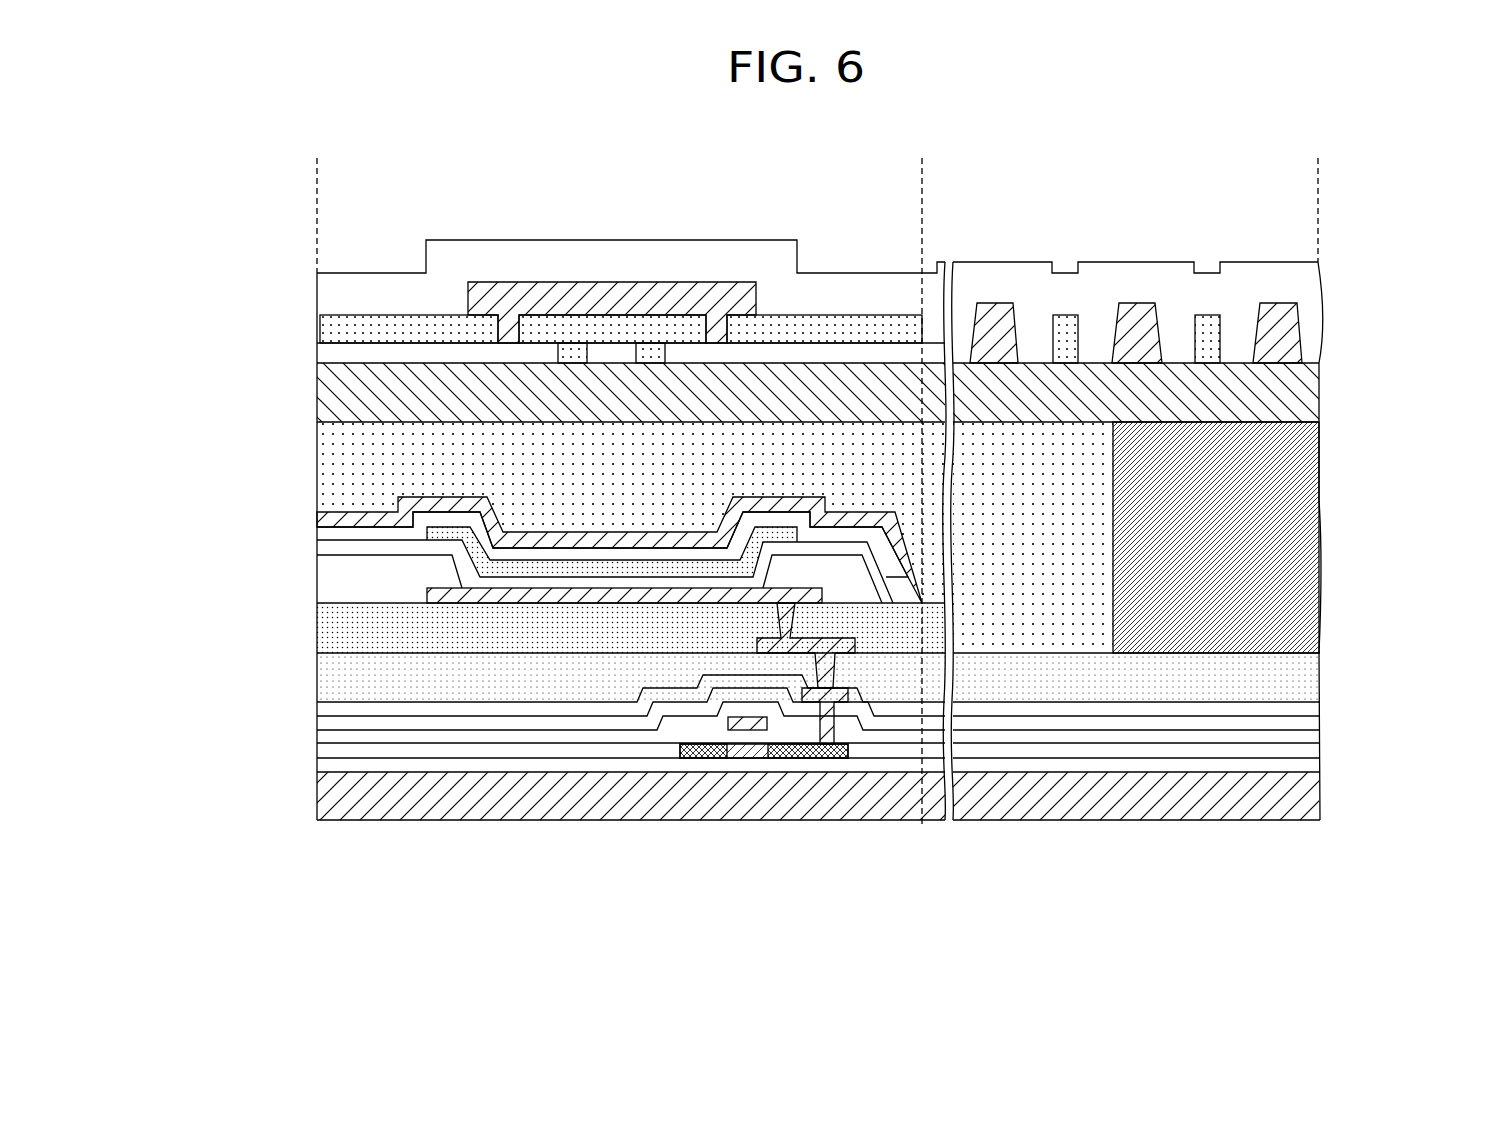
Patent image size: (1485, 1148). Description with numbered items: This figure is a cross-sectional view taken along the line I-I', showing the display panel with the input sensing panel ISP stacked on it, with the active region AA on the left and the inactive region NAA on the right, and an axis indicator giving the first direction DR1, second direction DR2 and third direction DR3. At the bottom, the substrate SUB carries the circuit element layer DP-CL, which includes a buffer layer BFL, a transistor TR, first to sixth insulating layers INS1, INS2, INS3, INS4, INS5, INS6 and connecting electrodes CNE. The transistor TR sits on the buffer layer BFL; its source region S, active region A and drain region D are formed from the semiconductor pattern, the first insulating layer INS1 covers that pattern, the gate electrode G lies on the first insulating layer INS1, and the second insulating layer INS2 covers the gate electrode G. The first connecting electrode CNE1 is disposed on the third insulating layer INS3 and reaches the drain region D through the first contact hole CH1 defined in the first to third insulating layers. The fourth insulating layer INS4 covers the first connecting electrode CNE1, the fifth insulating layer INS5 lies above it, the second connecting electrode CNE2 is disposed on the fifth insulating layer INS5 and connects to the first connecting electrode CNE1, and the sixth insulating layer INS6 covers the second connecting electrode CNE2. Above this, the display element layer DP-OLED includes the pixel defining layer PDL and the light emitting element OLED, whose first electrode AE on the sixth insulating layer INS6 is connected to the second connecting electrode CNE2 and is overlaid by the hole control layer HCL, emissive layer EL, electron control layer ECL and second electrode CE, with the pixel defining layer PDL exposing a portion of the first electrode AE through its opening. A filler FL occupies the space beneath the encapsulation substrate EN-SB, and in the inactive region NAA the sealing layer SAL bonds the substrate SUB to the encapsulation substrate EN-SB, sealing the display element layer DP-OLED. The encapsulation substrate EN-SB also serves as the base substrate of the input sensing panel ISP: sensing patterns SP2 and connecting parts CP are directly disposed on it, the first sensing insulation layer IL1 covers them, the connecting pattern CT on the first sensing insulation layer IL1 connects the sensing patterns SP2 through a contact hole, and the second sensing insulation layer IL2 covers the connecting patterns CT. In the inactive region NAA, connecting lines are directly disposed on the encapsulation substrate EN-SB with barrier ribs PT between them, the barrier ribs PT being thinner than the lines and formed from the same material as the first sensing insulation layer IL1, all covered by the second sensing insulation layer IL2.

The active region AA is at (922, 158).
The inactive region NAA is at (1318, 158).
The substrate SUB is at (1315, 800).
The buffer layer BFL is at (1315, 765).
The first insulating layer INS1 is at (1315, 750).
The second insulating layer INS2 is at (1315, 737).
The third insulating layer INS3 is at (1315, 722).
The fourth insulating layer INS4 is at (1315, 710).
The fifth insulating layer INS5 is at (1313, 680).
The sixth insulating layer INS6 is at (328, 627).
The active region A is at (743, 758).
The source region S is at (698, 758).
The drain region D is at (783, 758).
The gate electrode G is at (728, 722).
The transistor TR is at (795, 882).
The first connecting electrode CNE1 is at (825, 700).
The second connecting electrode CNE2 is at (860, 652).
The connecting electrodes CNE is at (922, 882).
The first contact hole CH1 is at (815, 654).
The first electrode AE is at (447, 603).
The pixel defining layer PDL is at (328, 578).
The hole control layer HCL is at (490, 590).
The emissive layer EL is at (537, 572).
The electron control layer ECL is at (573, 560).
The second electrode CE is at (597, 550).
The light emitting element OLED is at (623, 882).
The filler FL is at (328, 465).
The sealing layer SAL is at (1318, 530).
The encapsulation substrate EN-SB is at (1320, 395).
The sensing pattern SP2 is at (328, 352).
The first sensing insulation layer IL1 is at (328, 323).
The second sensing insulation layer IL2 is at (328, 288).
The connecting part CP is at (610, 350).
The connecting pattern CT is at (690, 297).
The input sensing panel ISP is at (317, 362).
The display element layer DP-OLED is at (317, 600).
The circuit element layer DP-CL is at (317, 769).
The barrier ribs PT is at (1210, 335).
The section line start I is at (318, 844).
The section line end I' is at (1327, 834).
The first direction DR1 is at (127, 941).
The second direction DR2 is at (136, 926).
The third direction DR3 is at (127, 917).